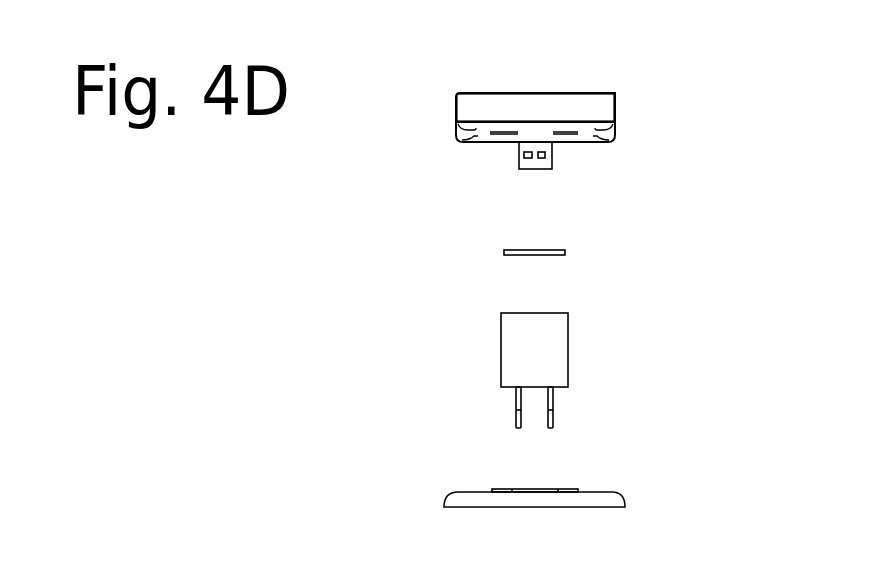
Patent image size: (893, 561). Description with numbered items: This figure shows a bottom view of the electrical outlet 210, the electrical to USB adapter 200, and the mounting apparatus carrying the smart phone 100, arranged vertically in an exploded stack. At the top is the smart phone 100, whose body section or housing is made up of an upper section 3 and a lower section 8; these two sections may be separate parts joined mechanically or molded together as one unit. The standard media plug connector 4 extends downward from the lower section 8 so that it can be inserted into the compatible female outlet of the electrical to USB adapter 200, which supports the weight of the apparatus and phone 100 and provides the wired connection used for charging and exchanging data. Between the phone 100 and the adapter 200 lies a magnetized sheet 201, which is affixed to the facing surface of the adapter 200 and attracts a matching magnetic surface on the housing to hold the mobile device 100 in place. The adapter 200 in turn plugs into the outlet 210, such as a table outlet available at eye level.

The smart phone 100 is at (562, 37).
The upper section 3 is at (487, 83).
The lower section 8 is at (588, 174).
The standard media plug connector 4 is at (576, 191).
The magnetized sheet 201 is at (427, 217).
The electrical to USB adapter 200 is at (523, 321).
The outlet 210 is at (597, 463).